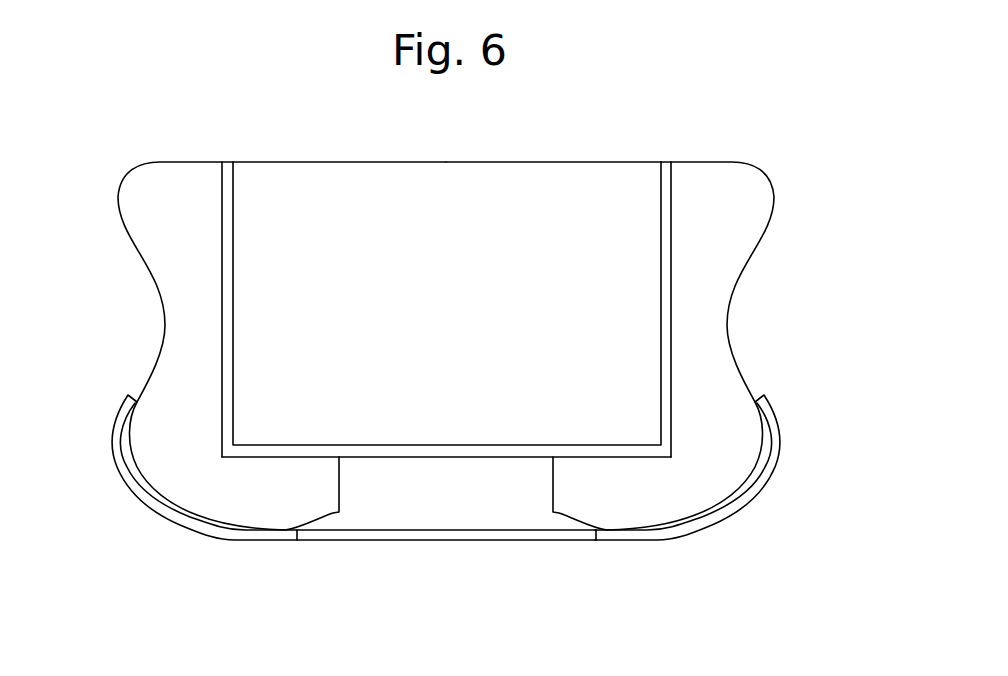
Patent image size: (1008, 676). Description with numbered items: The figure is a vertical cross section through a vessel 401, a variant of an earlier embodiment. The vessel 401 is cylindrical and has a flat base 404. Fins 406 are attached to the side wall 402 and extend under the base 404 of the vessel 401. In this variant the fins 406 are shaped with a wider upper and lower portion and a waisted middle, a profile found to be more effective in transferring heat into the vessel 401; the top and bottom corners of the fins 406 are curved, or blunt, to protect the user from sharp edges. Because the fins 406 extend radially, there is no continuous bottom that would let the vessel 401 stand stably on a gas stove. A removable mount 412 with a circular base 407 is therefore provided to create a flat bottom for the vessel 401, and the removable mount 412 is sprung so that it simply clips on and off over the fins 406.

The vessel 401 is at (214, 138).
The side wall 402 is at (666, 218).
The base 404 is at (433, 457).
The fins 406 is at (162, 297).
The circular base 407 is at (365, 538).
The removable mount 412 is at (157, 515).